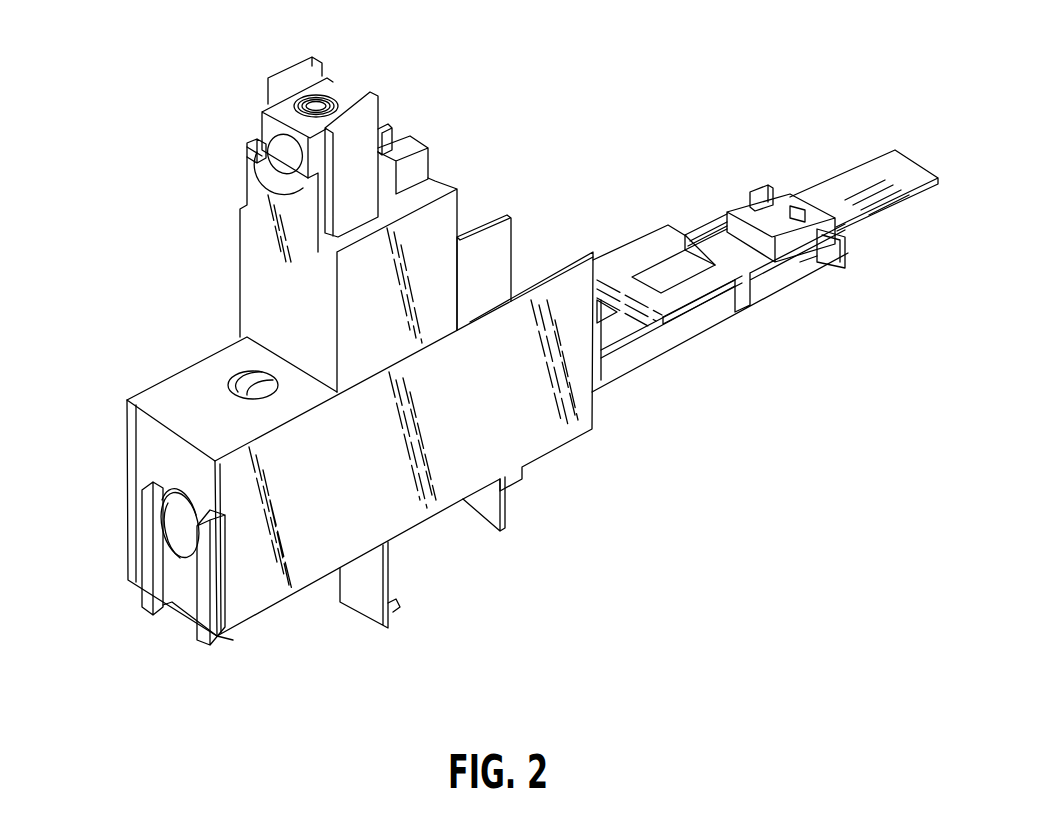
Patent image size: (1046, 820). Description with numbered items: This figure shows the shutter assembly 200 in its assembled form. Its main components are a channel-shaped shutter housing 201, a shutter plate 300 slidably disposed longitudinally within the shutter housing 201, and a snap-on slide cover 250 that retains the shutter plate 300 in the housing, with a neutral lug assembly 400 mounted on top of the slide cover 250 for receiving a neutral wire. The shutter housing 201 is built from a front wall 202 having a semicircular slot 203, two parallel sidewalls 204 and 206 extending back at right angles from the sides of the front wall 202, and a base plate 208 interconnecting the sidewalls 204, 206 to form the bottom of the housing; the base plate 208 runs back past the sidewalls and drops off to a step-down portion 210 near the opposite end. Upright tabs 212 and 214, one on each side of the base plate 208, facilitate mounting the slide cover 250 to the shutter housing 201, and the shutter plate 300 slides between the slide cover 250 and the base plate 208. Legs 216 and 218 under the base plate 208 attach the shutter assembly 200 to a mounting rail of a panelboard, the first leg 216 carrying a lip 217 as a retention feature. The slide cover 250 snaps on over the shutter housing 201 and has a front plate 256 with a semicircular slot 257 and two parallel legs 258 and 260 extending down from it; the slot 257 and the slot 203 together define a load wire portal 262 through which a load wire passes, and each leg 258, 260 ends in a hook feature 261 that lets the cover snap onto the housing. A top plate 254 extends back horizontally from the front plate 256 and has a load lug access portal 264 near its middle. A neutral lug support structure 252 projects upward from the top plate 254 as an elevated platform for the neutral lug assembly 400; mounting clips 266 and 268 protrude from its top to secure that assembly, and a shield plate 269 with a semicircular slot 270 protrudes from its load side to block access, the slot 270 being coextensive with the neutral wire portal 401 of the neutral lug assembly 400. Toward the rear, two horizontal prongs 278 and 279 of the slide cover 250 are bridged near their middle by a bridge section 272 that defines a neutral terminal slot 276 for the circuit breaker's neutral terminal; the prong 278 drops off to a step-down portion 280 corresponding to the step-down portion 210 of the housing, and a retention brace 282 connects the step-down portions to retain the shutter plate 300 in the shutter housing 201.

The shutter assembly 200 is at (552, 72).
The shutter housing 201 is at (497, 427).
The front wall 202 is at (188, 588).
The semicircular slot 203 is at (177, 545).
The sidewall 204 is at (510, 290).
The sidewall 206 is at (480, 220).
The base plate 208 is at (677, 340).
The step-down portion 210 is at (752, 305).
The tab 212 is at (758, 192).
The tab 214 is at (847, 250).
The first leg 216 is at (392, 610).
The lip 217 is at (407, 609).
The leg 218 is at (507, 510).
The slide cover 250 is at (390, 331).
The neutral lug support structure 252 is at (257, 233).
The top plate 254 is at (168, 397).
The front plate 256 is at (147, 433).
The semicircular slot 257 is at (153, 490).
The leg 258 is at (147, 567).
The leg 260 is at (210, 633).
The hook feature 261 is at (231, 637).
The load wire portal 262 is at (172, 525).
The load lug access portal 264 is at (240, 377).
The mounting clip 266 is at (288, 62).
The mounting clip 268 is at (340, 100).
The shield plate 269 is at (258, 180).
The semicircular slot 270 is at (273, 173).
The bridge section 272 is at (618, 262).
The neutral terminal slot 276 is at (608, 317).
The horizontal prong 278 is at (667, 250).
The horizontal prong 279 is at (698, 295).
The step-down portion 280 is at (817, 262).
The retention brace 282 is at (743, 212).
The shutter plate 300 is at (910, 191).
The neutral lug assembly 400 is at (240, 116).
The neutral wire portal 401 is at (270, 150).